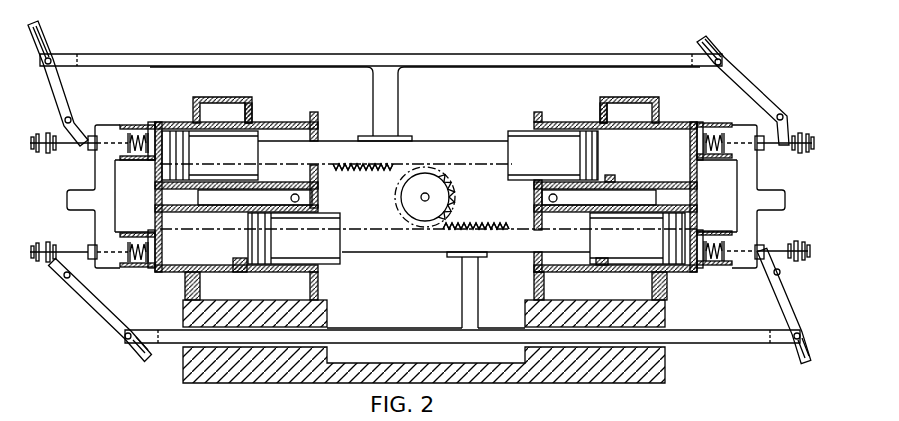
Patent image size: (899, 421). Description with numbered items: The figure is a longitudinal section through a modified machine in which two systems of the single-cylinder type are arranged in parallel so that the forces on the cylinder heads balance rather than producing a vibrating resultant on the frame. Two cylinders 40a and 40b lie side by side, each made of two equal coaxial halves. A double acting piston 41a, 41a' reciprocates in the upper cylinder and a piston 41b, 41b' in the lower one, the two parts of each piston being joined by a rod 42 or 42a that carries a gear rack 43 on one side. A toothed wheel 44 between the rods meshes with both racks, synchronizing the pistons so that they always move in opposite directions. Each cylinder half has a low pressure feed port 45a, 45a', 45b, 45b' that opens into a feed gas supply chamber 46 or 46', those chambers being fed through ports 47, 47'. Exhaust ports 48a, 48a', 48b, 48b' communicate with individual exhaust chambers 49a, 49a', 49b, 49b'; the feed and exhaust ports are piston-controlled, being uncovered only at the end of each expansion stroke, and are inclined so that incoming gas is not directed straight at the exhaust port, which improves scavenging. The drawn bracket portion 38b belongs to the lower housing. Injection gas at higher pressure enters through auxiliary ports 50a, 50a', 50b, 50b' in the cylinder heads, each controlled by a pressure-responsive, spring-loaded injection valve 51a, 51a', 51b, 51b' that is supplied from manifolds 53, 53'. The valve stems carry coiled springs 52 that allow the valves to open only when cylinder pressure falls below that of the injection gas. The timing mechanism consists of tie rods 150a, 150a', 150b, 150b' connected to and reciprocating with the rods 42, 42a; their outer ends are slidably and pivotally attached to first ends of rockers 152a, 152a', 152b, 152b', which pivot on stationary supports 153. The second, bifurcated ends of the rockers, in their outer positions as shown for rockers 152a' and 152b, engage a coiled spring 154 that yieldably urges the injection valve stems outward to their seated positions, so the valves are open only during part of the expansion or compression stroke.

The bracket wall 38b is at (188, 273).
The cylinder 40a is at (311, 112).
The cylinder 40b is at (297, 273).
The double acting piston 41a is at (232, 180).
The double acting piston 41a' is at (585, 185).
The double acting piston 41b is at (263, 249).
The double acting piston 41b' is at (615, 226).
The rod 42 is at (452, 122).
The rod 42a is at (417, 245).
The gear rack 43 is at (352, 168).
The toothed wheel 44 is at (452, 205).
The low pressure feed port 45a is at (210, 155).
The low pressure feed port 45a' is at (579, 156).
The low pressure feed port 45b is at (269, 238).
The low pressure feed port 45b' is at (637, 238).
The feed gas supply chamber 46 is at (232, 198).
The feed gas supply chamber 46' is at (611, 198).
The port 47 is at (317, 198).
The port 47' is at (524, 198).
The exhaust port 48a is at (265, 111).
The exhaust port 48a' is at (625, 127).
The exhaust port 48b is at (217, 259).
The exhaust port 48b' is at (622, 251).
The exhaust chamber 49a is at (222, 98).
The exhaust chamber 49a' is at (622, 98).
The exhaust chamber 49b is at (343, 294).
The exhaust chamber 49b' is at (577, 285).
The auxiliary port 50a is at (120, 125).
The auxiliary port 50a' is at (711, 126).
The auxiliary port 50b is at (134, 268).
The auxiliary port 50b' is at (723, 263).
The injection valve 51a is at (129, 118).
The injection valve 51a' is at (680, 129).
The injection valve 51b is at (172, 247).
The injection valve 51b' is at (716, 266).
The coiled spring 52 is at (144, 160).
The manifold 53 is at (108, 196).
The manifold 53' is at (741, 196).
The tie rod 150a is at (210, 50).
The tie rod 150a' is at (551, 50).
The tie rod 150b is at (292, 352).
The tie rod 150b' is at (630, 345).
The rocker 152a is at (64, 83).
The rocker 152a' is at (745, 90).
The rocker 152b is at (99, 310).
The rocker 152b' is at (780, 310).
The stationary support 153 is at (65, 120).
The coiled spring 154 is at (40, 150).